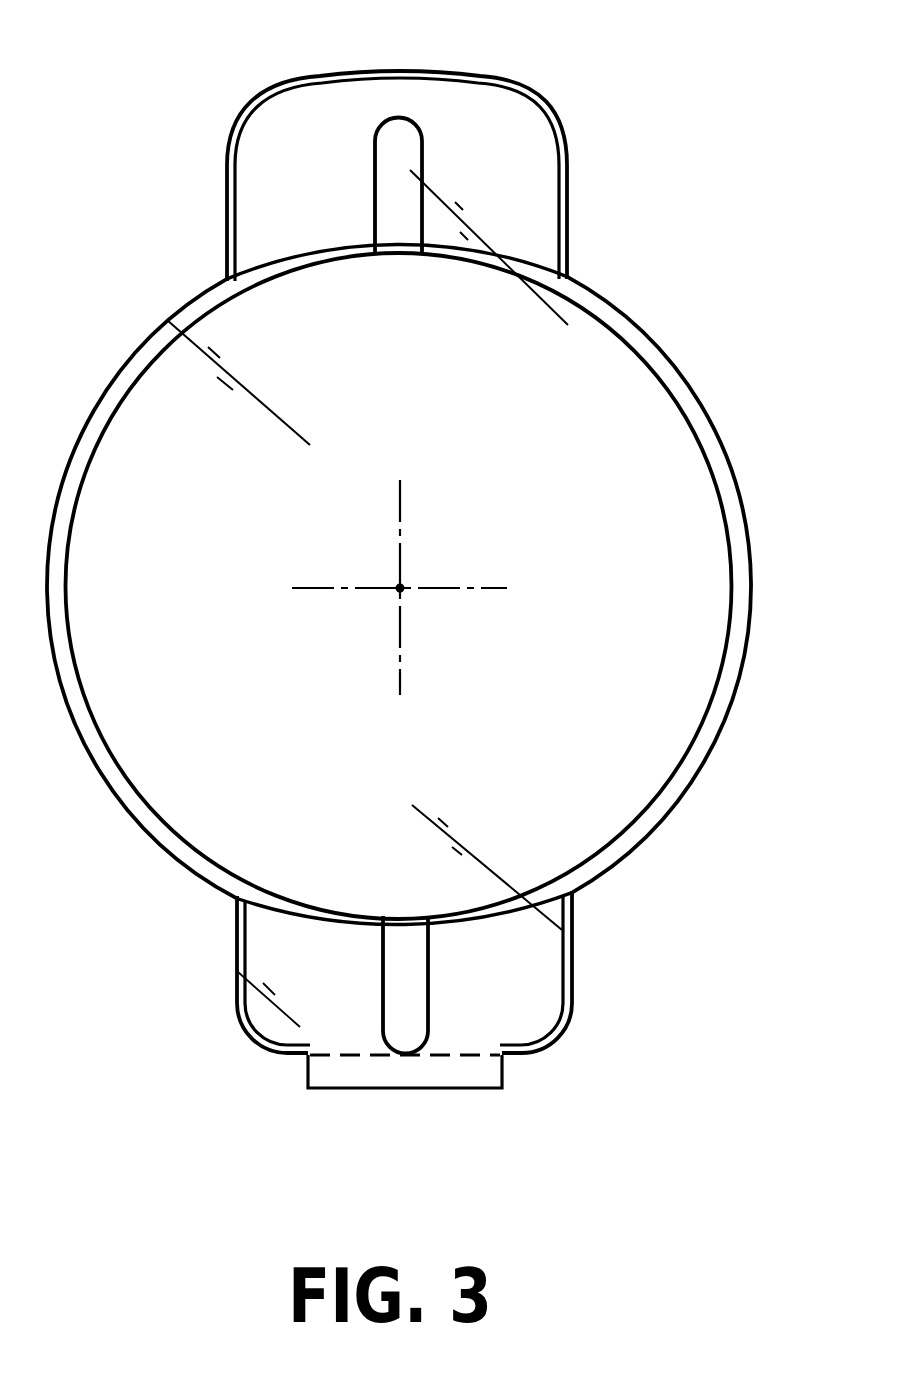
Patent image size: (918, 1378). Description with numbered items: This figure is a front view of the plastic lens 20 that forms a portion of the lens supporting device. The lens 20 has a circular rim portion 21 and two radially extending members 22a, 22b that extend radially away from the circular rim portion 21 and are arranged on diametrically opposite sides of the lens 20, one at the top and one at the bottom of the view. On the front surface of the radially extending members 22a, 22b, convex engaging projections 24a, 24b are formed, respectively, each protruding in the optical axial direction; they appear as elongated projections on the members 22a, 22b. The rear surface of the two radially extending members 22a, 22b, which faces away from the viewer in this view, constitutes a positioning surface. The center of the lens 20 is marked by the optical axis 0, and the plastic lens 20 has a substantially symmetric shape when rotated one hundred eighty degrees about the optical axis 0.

The plastic lens 20 is at (667, 217).
The circular rim portion 21 is at (745, 500).
The radially extending member 22a is at (528, 135).
The radially extending member 22b is at (252, 1000).
The convex engaging projection 24a is at (393, 133).
The convex engaging projection 24b is at (399, 1030).
The optical axis 0 is at (404, 587).